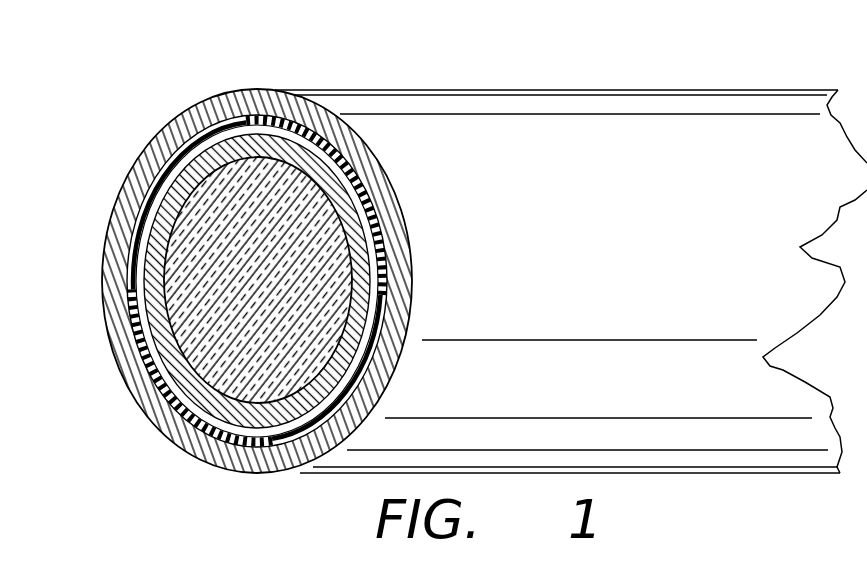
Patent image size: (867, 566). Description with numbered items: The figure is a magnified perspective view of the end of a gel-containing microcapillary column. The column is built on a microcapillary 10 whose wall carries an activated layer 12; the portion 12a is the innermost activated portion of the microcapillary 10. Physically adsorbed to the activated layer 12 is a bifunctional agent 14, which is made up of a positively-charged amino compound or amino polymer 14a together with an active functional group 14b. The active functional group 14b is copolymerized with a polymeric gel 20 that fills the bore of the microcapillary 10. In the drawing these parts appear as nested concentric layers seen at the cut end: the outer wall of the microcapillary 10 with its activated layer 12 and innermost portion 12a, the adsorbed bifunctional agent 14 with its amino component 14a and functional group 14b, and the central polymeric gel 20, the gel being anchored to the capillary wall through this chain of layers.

The microcapillary 10 is at (478, 86).
The activated layer 12 is at (141, 242).
The inner most activated portion 12a is at (135, 246).
The bifunctional agent 14 is at (152, 330).
The positively-charged amino compound or amino polymer 14a is at (158, 297).
The active functional group 14b is at (197, 363).
The polymeric gel 20 is at (234, 177).